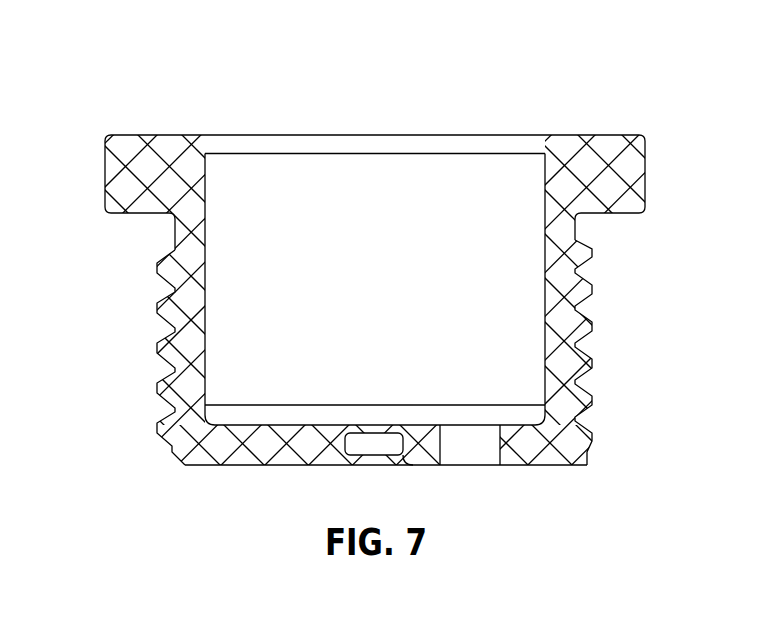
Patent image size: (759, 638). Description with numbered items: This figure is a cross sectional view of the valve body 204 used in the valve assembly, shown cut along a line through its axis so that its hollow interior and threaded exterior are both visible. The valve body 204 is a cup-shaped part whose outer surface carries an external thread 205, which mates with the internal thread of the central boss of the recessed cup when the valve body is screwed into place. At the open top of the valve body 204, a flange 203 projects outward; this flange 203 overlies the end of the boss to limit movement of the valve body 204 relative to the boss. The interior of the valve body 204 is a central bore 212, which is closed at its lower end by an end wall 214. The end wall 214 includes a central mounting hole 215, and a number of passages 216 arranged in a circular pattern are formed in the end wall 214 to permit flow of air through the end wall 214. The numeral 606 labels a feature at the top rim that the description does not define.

The valve body 204 is at (404, 125).
The flange 203 is at (585, 135).
The external thread 205 is at (163, 286).
The top rim 606 is at (197, 134).
The central bore 212 is at (348, 170).
The end wall 214 is at (278, 410).
The central mounting hole 215 is at (375, 443).
The passages 216 is at (470, 445).